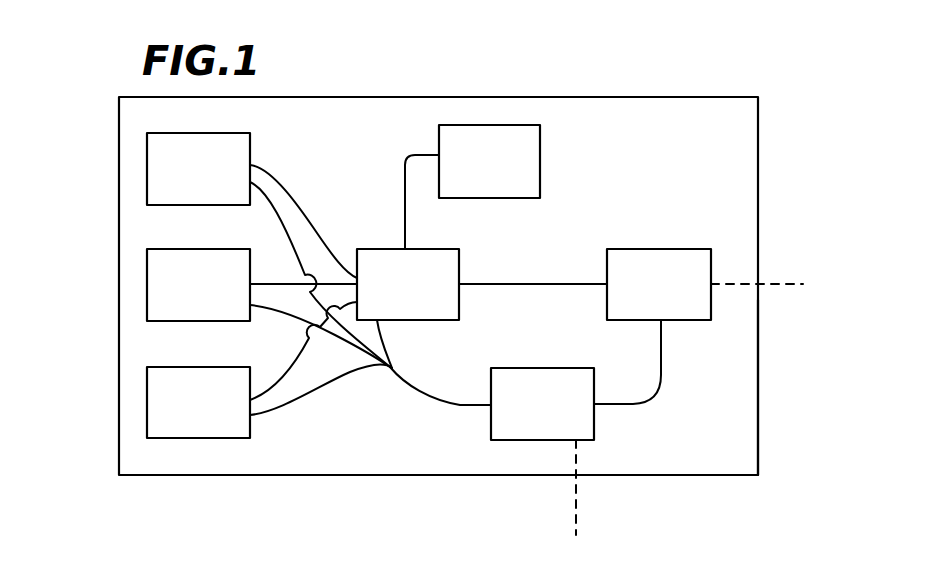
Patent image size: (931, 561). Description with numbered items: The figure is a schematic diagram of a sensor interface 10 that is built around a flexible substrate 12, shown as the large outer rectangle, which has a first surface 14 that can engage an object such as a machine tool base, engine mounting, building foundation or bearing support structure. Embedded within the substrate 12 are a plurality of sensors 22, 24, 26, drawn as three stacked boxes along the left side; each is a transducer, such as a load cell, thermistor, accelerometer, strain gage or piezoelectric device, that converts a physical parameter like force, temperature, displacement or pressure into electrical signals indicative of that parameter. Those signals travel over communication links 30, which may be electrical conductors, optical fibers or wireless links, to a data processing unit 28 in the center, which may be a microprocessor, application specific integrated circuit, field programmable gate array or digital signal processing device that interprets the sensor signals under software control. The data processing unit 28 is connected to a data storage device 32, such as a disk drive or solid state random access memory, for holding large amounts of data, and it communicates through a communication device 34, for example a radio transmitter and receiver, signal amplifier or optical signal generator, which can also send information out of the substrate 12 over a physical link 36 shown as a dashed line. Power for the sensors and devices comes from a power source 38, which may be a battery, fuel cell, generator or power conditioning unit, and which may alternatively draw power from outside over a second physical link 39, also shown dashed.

The sensor interface 10 is at (796, 124).
The flexible substrate 12 is at (745, 450).
The first surface 14 is at (742, 390).
The sensor 22 is at (155, 410).
The sensor 24 is at (155, 295).
The sensor 26 is at (155, 182).
The data processing unit 28 is at (450, 272).
The communication links 30 is at (298, 207).
The data storage device 32 is at (533, 153).
The communication device 34 is at (647, 260).
The physical link 36 is at (778, 278).
The power source 38 is at (500, 427).
The physical link 39 is at (582, 505).